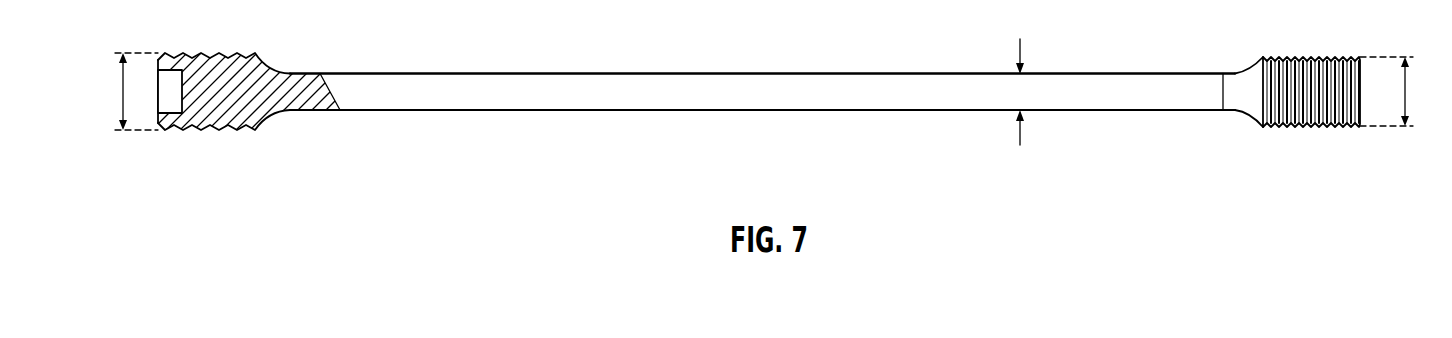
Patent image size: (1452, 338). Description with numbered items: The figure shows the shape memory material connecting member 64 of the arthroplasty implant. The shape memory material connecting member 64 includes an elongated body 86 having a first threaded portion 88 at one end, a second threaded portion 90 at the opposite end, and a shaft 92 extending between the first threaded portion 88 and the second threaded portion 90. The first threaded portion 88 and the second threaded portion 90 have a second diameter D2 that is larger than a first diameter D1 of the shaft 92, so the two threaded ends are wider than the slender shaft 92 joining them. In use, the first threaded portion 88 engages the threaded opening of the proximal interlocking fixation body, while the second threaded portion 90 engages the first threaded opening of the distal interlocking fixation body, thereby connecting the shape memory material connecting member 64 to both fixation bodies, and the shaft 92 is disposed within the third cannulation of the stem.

The shape memory material connecting member 64 is at (1059, 27).
The elongated body 86 is at (634, 126).
The first threaded portion 88 is at (212, 116).
The second threaded portion 90 is at (1273, 124).
The shaft 92 is at (798, 98).
The first diameter D1 is at (1018, 52).
The second diameter D2 is at (119, 108).